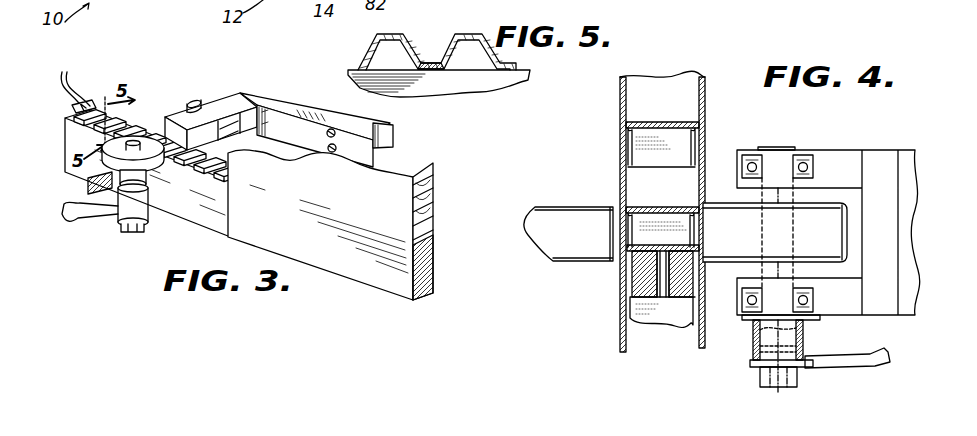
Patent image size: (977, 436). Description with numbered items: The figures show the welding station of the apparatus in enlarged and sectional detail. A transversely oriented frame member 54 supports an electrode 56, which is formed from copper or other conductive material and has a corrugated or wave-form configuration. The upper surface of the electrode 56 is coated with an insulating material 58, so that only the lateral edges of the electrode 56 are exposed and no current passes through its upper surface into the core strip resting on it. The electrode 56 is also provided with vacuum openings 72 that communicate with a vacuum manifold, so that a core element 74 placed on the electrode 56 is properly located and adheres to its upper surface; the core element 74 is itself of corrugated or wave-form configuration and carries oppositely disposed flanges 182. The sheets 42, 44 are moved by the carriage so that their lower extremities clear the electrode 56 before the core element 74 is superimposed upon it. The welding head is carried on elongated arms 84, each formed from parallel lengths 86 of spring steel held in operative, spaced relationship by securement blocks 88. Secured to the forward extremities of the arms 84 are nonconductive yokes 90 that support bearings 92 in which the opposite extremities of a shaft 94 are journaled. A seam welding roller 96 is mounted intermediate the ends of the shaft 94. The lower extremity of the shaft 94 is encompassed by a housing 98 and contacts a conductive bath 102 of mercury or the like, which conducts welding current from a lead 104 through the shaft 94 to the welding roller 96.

In FIG. 3, the sheet 42 is at (397, 287).
In FIG. 4, the sheet 42 is at (620, 102).
In FIG. 3, the sheet 44 is at (433, 290).
In FIG. 4, the sheet 44 is at (702, 173).
In FIG. 3, the frame member 54 is at (213, 203).
In FIG. 5, the frame member 54 is at (422, 86).
In FIG. 4, the frame member 54 is at (632, 296).
In FIG. 3, the electrode 56 is at (135, 118).
In FIG. 5, the electrode 56 is at (455, 68).
In FIG. 4, the electrode 56 is at (635, 262).
In FIG. 5, the insulating material 58 is at (497, 50).
In FIG. 4, the insulating material 58 is at (627, 242).
In FIG. 4, the vacuum openings 72 is at (647, 283).
In FIG. 3, the core element 74 is at (433, 192).
In FIG. 4, the core element 74 is at (702, 98).
In FIG. 3, the arms 84 is at (278, 113).
In FIG. 3, the lengths of spring steel 86 is at (392, 146).
In FIG. 3, the securement blocks 88 is at (348, 122).
In FIG. 3, the yoke 90 is at (213, 106).
In FIG. 4, the yoke 90 is at (830, 158).
In FIG. 4, the bearings 92 is at (802, 157).
In FIG. 3, the shaft 94 is at (143, 178).
In FIG. 4, the shaft 94 is at (793, 270).
In FIG. 3, the seam welding roller 96 is at (110, 155).
In FIG. 4, the seam welding roller 96 is at (837, 235).
In FIG. 3, the housing 98 is at (133, 216).
In FIG. 4, the housing 98 is at (802, 361).
In FIG. 4, the conductive bath 102 is at (750, 365).
In FIG. 3, the lead 104 is at (76, 222).
In FIG. 4, the lead 104 is at (885, 357).
In FIG. 4, the flanges 182 is at (625, 130).